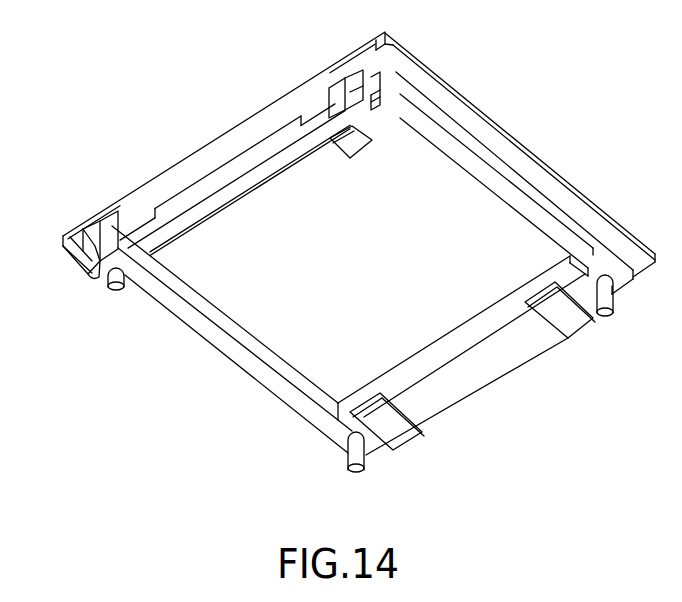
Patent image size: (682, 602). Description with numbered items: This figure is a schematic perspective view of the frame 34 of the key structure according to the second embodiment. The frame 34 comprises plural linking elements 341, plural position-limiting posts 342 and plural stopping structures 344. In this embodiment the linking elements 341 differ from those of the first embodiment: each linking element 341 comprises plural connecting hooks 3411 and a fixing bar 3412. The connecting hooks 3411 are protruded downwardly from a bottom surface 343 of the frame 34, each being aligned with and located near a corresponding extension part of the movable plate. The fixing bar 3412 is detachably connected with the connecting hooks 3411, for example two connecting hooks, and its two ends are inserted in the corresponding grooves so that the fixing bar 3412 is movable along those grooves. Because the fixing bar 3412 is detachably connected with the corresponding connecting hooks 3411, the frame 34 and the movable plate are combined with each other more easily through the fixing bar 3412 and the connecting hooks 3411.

The frame 34 is at (516, 134).
The linking element 341 is at (385, 70).
The connecting hook 3411 is at (362, 70).
The fixing bar 3412 is at (241, 189).
The position-limiting post 342 is at (606, 302).
The bottom surface 343 is at (500, 190).
The stopping structure 344 is at (348, 142).